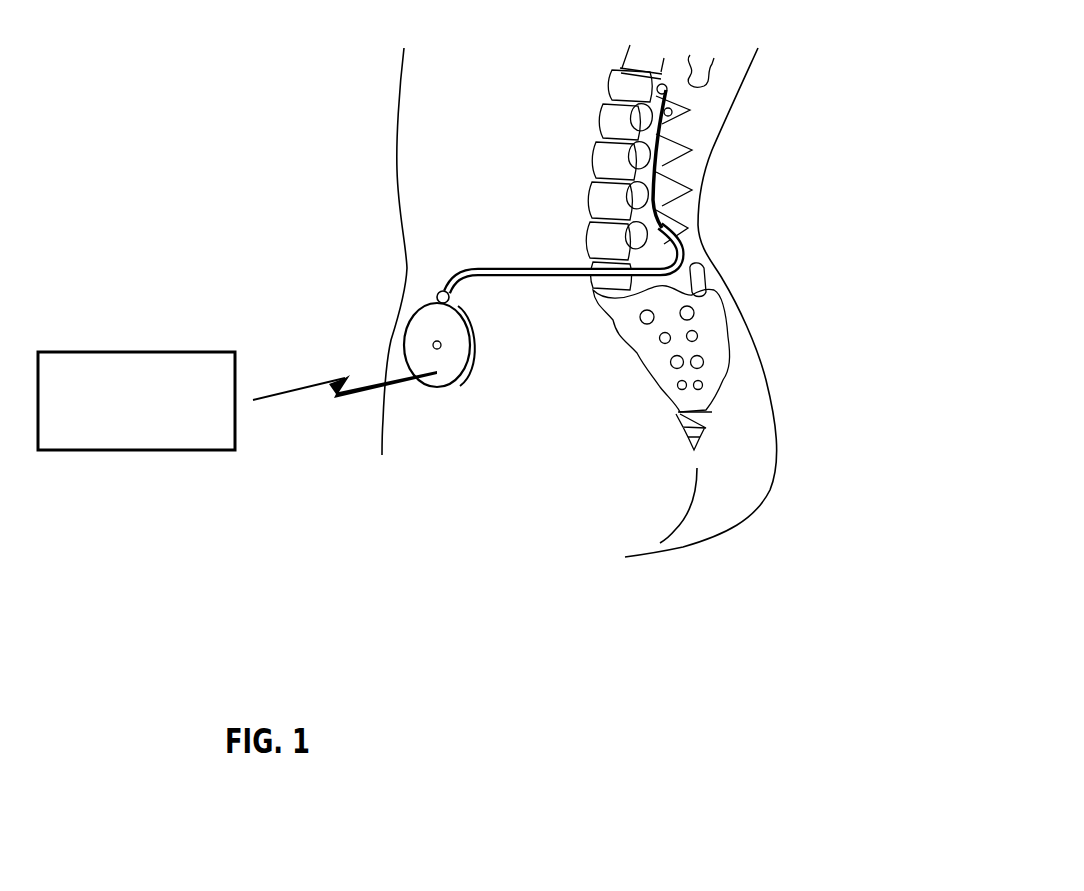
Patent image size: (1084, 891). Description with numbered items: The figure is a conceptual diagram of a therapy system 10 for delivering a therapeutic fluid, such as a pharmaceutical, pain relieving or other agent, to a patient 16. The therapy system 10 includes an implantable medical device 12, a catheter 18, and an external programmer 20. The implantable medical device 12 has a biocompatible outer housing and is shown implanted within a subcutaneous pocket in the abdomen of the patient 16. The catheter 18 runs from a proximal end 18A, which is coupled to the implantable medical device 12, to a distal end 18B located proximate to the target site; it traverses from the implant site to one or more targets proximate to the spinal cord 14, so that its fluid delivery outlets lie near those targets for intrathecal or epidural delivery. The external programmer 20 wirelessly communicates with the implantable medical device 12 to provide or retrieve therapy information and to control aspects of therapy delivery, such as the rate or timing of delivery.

The therapy system 10 is at (356, 281).
The implantable medical device 12 is at (402, 398).
The spinal cord 14 is at (692, 188).
The patient 16 is at (748, 80).
The catheter 18 is at (480, 248).
The proximal end 18A is at (443, 290).
The distal end 18B is at (676, 238).
The external programmer 20 is at (149, 426).